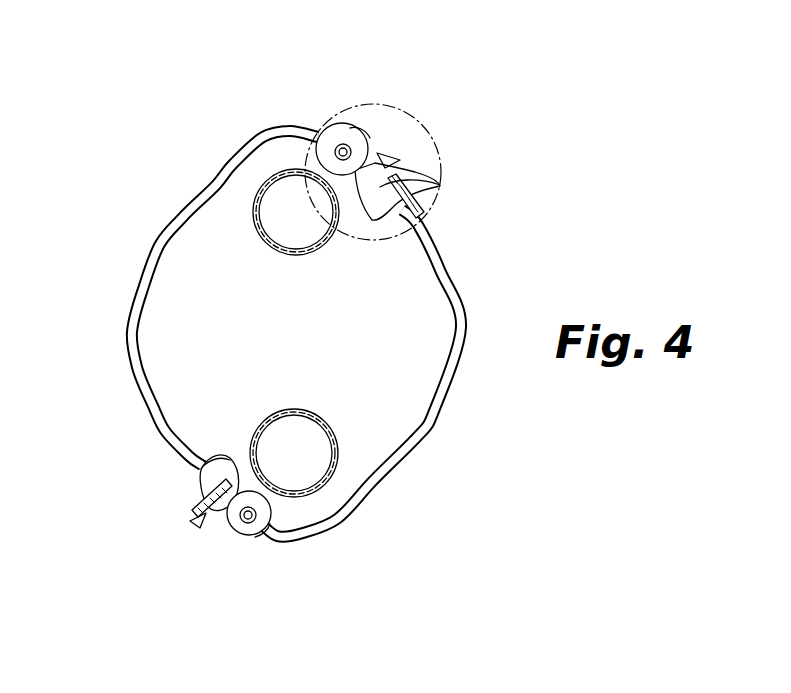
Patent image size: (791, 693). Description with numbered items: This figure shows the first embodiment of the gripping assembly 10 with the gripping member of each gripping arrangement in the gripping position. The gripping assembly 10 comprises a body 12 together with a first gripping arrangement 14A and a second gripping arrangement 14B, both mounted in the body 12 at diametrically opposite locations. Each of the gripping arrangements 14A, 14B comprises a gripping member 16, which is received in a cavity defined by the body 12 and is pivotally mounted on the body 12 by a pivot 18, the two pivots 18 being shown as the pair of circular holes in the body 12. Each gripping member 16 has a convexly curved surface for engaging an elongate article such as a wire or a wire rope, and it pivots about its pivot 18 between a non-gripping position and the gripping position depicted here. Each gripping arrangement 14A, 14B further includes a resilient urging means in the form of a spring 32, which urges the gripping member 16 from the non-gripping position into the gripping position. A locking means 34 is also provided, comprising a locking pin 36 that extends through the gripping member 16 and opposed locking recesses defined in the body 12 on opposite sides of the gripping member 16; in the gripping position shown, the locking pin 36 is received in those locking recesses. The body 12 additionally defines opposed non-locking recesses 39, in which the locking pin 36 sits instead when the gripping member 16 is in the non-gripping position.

The gripping assembly 10 is at (287, 334).
The body 12 is at (190, 345).
The first gripping arrangement 14A is at (316, 124).
The second gripping arrangement 14B is at (214, 532).
The gripping member 16 is at (343, 132).
The pivot 18 is at (283, 220).
The spring 32 is at (385, 167).
The locking means 34 is at (362, 138).
The locking pin 36 is at (300, 163).
The non-locking recesses 39 is at (440, 185).